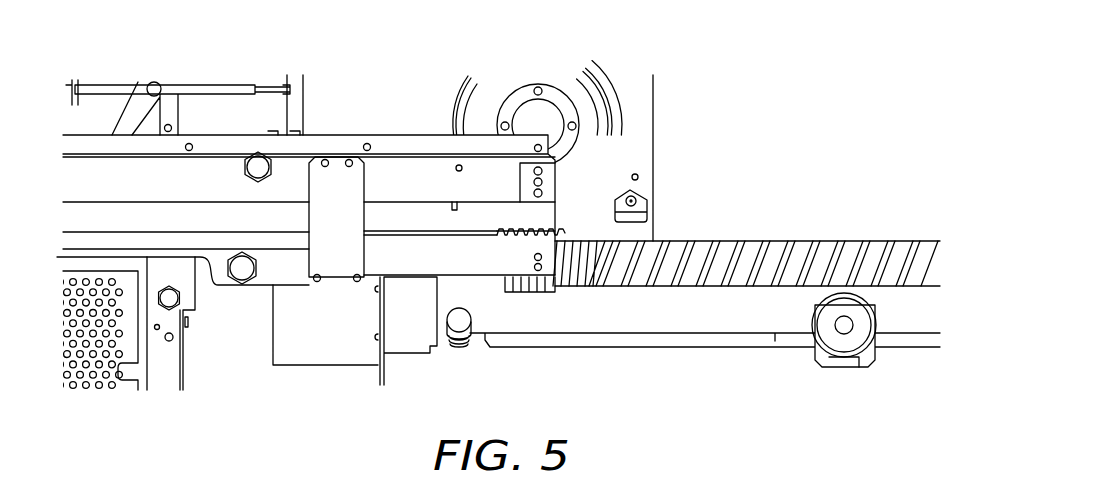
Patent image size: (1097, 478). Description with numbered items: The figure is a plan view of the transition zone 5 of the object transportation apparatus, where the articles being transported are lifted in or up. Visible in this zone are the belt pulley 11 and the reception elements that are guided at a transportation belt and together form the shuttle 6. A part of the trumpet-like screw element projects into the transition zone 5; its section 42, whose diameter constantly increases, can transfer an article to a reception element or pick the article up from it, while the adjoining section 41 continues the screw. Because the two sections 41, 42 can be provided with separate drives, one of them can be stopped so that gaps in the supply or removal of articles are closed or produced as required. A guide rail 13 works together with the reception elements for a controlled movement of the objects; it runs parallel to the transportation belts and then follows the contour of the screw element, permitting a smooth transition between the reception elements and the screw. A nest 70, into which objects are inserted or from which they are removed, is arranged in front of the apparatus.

The transition zone 5 is at (508, 226).
The shuttle 6 is at (285, 232).
The belt pulley 11 is at (583, 103).
The guide rail 13 is at (445, 268).
The section of the screw element 41 is at (805, 252).
The section of the screw element 42 is at (589, 286).
The nest 70 is at (130, 343).